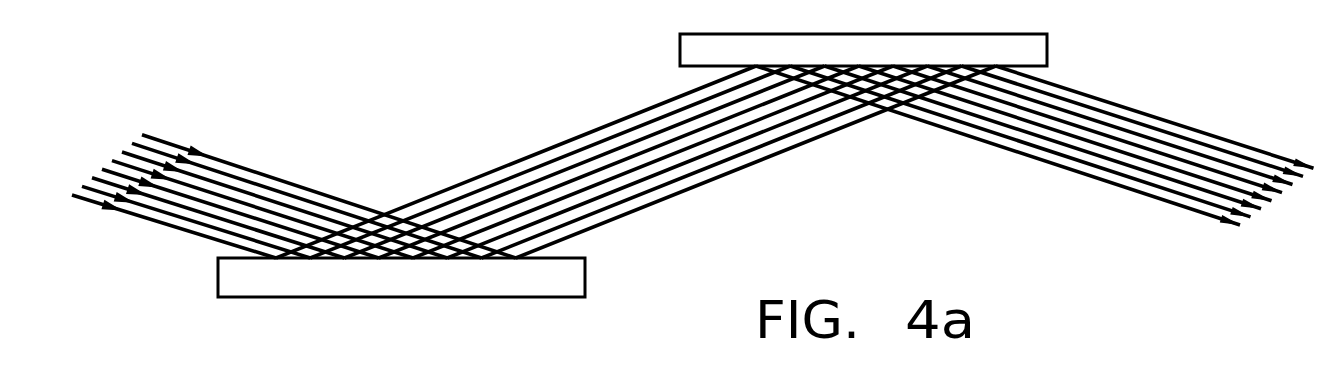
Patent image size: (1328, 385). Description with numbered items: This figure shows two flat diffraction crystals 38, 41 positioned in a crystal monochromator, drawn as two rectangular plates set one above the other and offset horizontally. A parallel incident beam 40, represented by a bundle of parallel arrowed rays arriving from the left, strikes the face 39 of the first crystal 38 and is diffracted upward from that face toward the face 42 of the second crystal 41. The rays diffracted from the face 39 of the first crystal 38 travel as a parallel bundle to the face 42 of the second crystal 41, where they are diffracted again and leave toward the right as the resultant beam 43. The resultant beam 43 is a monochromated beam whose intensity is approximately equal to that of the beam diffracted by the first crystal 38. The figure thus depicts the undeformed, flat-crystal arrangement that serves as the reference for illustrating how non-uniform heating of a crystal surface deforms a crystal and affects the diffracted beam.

The flat diffraction crystal 38 is at (218, 278).
The face of crystal 39 is at (250, 258).
The parallel incident beam 40 is at (294, 175).
The flat diffraction crystal 41 is at (680, 52).
The face of crystal 42 is at (708, 68).
The resultant beam 43 is at (1103, 184).